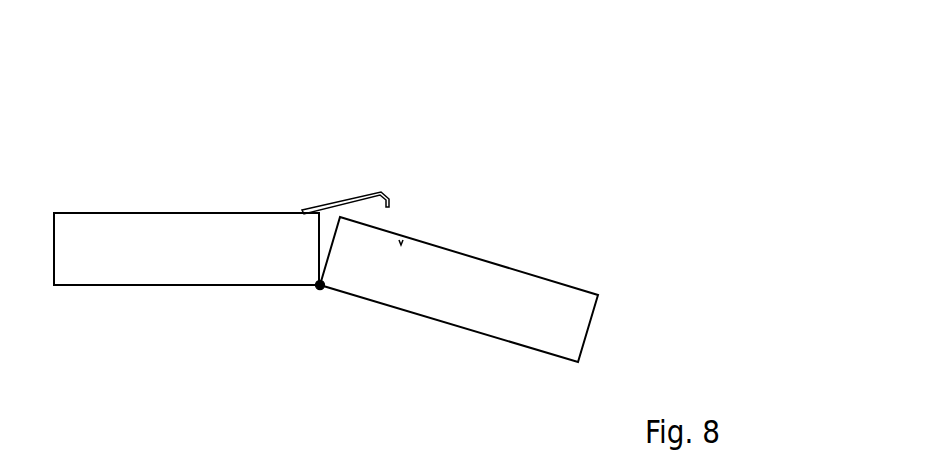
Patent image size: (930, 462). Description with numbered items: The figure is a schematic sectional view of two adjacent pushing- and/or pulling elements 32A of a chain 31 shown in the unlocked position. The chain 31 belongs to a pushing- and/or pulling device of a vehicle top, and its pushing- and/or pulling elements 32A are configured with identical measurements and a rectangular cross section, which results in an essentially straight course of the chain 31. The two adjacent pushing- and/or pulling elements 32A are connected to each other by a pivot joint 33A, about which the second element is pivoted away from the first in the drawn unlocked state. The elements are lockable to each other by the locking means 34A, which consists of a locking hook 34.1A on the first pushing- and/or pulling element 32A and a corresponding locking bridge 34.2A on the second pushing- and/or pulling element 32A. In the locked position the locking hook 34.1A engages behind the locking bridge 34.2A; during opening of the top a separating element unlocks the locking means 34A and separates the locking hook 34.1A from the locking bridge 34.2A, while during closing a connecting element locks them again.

The chain 31 is at (593, 271).
The pushing- and/or pulling element 32A is at (157, 225).
The pivot joint 33A is at (317, 293).
The locking means 34A is at (377, 159).
The locking hook 34.1A is at (330, 207).
The locking bridge 34.2A is at (402, 243).